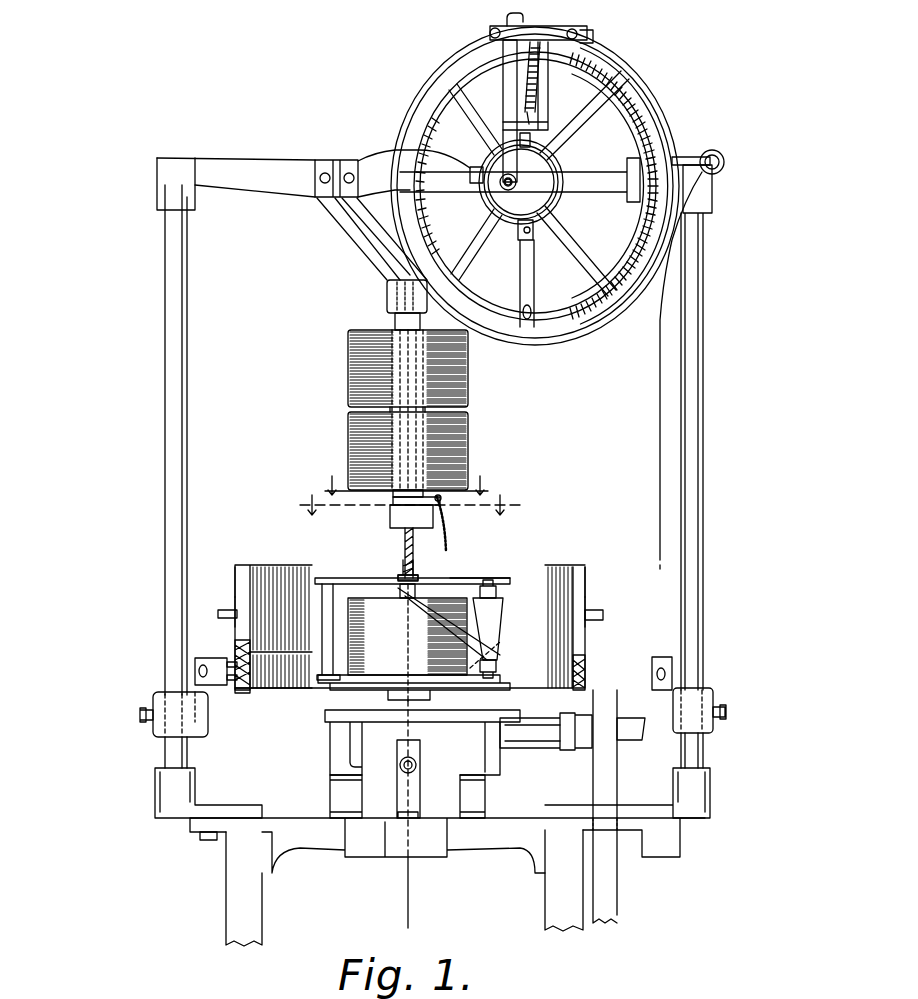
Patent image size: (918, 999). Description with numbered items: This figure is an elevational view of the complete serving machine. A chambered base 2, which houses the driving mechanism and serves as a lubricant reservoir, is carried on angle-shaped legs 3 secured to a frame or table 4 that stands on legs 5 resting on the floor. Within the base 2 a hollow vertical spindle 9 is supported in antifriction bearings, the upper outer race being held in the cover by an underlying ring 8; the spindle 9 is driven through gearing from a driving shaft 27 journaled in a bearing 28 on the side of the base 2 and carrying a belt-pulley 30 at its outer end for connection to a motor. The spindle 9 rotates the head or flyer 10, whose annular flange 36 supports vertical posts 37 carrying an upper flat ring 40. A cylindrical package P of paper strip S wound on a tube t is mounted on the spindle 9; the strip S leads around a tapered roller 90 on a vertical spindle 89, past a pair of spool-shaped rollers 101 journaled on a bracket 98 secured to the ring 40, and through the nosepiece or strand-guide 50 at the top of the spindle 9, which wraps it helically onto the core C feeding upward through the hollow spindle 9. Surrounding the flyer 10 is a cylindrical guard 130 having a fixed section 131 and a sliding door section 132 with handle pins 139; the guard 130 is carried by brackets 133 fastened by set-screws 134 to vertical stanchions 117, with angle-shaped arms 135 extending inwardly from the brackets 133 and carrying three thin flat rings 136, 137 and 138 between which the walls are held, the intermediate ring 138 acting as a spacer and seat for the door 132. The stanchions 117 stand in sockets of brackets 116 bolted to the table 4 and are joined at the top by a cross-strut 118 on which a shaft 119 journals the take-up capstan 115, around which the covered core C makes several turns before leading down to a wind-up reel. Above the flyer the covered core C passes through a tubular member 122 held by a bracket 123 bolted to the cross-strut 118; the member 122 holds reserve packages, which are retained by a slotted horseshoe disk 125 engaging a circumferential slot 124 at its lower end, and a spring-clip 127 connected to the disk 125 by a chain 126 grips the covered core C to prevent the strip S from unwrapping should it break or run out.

The take-up wheel or capstan 115 is at (655, 106).
The cross-strut 118 is at (268, 166).
The shaft 119 is at (508, 192).
The vertical rods or stanchions 117 is at (180, 479).
The bracket 123 is at (372, 272).
The tubular member 122 is at (395, 318).
The cylindrical package P is at (462, 412).
The paper or fiber tube t is at (392, 378).
The ring 8 is at (404, 475).
The vertical shaft or spindle 9 is at (404, 505).
The circumferential slot 124 is at (400, 490).
The slotted disk or horseshoe-shaped member 125 is at (393, 510).
The spring-clip 127 is at (395, 528).
The chain 126 is at (450, 545).
The bracket 98 is at (445, 578).
The flat annulus or ring 40 is at (366, 578).
The vertical columns or posts 37 is at (330, 578).
The nosepiece or strand-guide 50 is at (400, 592).
The spool-shaped rollers 101 is at (428, 612).
The paper strip S is at (500, 636).
The vertical spindle 89 is at (500, 590).
The tapered roller 90 is at (503, 616).
The annular flange 36 is at (497, 677).
The head or flyer 10 is at (480, 690).
The guard 130 is at (240, 566).
The fixed part of guard 131 is at (237, 578).
The slidable part of guard 132 is at (237, 601).
The pins 139 is at (225, 616).
The outer ring 136 is at (240, 655).
The angle-shaped arms 135 is at (195, 670).
The intermediate ring 138 is at (250, 690).
The inner ring 137 is at (280, 690).
The brackets 133 is at (208, 720).
The set-screws 134 is at (140, 712).
The brackets 116 is at (185, 782).
The frame or table 4 is at (480, 848).
The legs 5 is at (262, 908).
The belt-pulley 30 is at (617, 772).
The chambered base 2 is at (422, 764).
The angle-shaped legs 3 is at (397, 795).
The bearing 28 is at (530, 725).
The driving shaft 27 is at (645, 732).
The core C is at (410, 870).